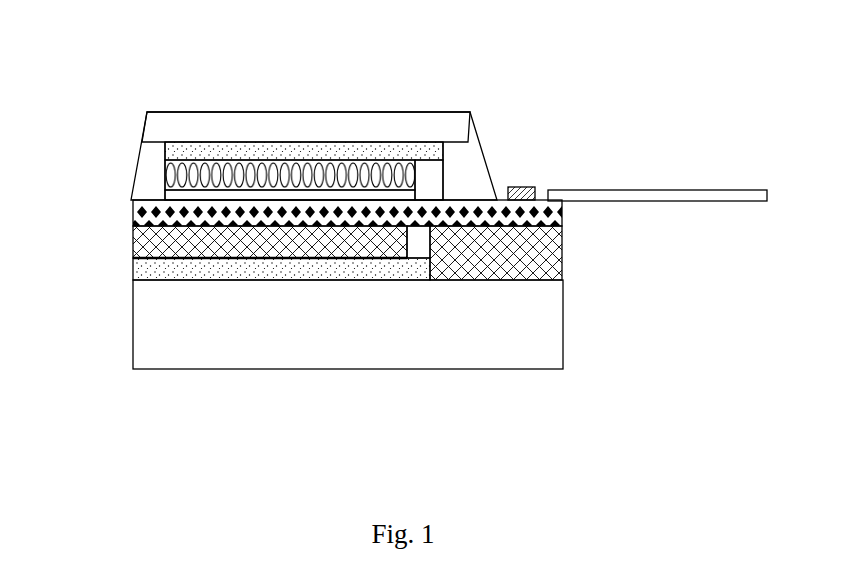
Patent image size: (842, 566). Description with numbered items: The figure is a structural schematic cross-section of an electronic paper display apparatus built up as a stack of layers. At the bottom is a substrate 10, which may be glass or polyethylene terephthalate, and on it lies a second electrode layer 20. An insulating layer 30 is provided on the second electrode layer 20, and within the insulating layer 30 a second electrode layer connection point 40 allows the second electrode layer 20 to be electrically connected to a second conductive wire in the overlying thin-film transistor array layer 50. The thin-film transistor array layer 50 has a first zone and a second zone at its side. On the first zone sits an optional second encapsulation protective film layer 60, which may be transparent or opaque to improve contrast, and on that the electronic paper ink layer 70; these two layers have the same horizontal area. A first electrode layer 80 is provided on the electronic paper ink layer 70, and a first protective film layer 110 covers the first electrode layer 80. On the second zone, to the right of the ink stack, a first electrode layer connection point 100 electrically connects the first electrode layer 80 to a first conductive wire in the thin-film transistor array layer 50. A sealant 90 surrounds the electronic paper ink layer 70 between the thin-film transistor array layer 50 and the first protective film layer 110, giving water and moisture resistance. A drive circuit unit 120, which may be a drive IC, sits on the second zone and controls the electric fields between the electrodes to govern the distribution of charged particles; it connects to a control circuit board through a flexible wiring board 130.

The substrate 10 is at (348, 324).
The second electrode layer 20 is at (133, 268).
The insulating layer 30 is at (133, 242).
The second electrode layer connection point 40 is at (425, 245).
The thin-film transistor array layer 50 is at (130, 200).
The second encapsulation protective film layer 60 is at (350, 193).
The electronic paper ink layer 70 is at (318, 172).
The first electrode layer 80 is at (280, 150).
The sealant 90 is at (148, 162).
The first electrode layer connection point 100 is at (423, 177).
The first protective film layer 110 is at (202, 123).
The drive circuit unit 120 is at (523, 190).
The flexible wiring board 130 is at (583, 197).